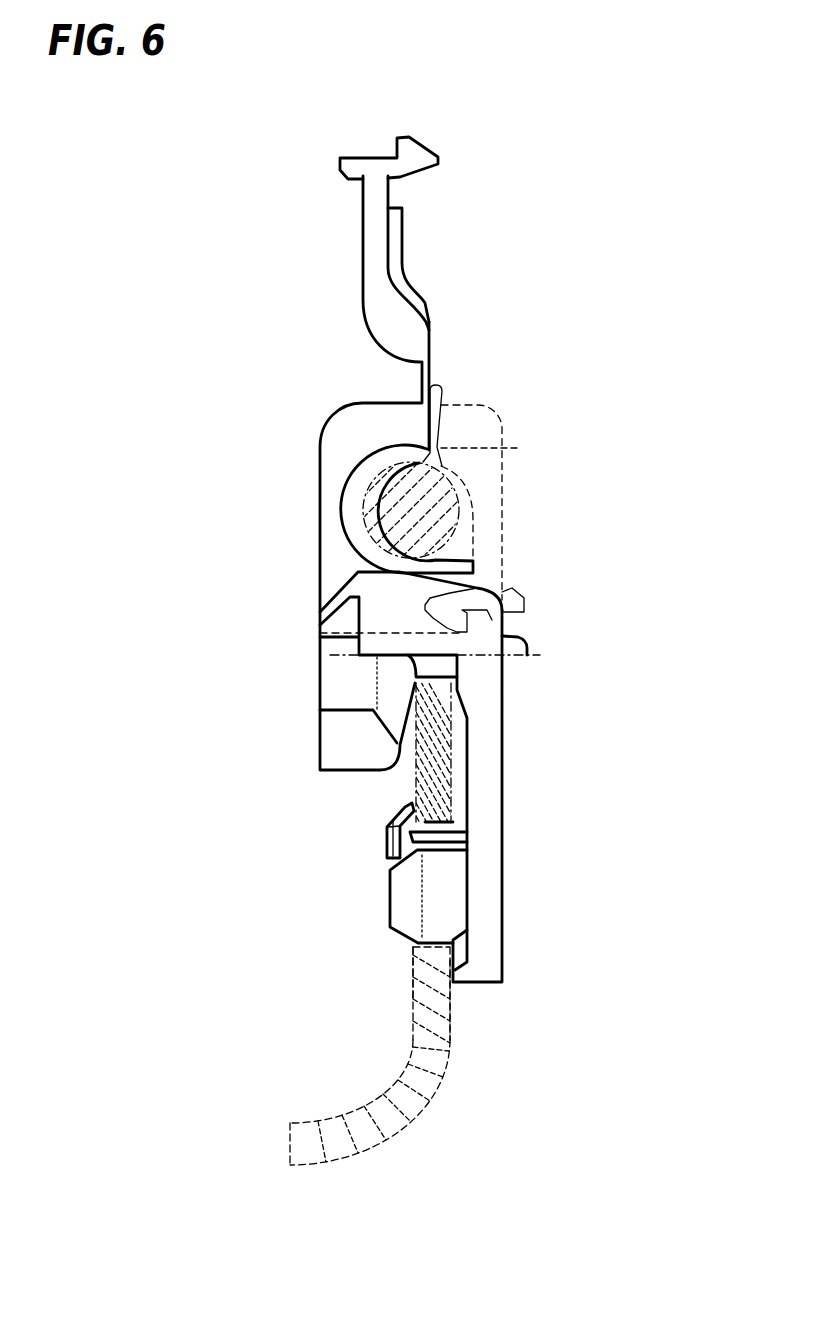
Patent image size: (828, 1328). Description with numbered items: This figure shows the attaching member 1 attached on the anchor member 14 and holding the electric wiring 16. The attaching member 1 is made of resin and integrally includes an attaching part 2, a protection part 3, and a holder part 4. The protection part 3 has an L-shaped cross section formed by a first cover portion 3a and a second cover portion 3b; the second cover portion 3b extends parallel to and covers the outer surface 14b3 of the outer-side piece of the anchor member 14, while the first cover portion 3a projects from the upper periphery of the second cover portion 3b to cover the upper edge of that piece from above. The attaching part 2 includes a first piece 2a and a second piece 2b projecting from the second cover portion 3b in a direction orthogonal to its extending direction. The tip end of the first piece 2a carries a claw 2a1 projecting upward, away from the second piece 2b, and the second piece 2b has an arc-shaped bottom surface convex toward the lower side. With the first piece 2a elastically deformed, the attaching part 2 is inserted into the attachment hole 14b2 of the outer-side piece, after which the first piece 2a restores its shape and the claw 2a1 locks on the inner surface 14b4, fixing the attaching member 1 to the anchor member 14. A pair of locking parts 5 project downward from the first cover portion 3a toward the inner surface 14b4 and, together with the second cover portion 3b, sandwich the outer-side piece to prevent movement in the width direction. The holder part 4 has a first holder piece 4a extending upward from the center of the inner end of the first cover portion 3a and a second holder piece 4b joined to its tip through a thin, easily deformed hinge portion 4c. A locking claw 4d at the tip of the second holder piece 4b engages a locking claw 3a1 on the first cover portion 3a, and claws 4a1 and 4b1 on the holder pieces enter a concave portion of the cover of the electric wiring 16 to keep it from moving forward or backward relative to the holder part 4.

The attaching member 1 is at (318, 403).
The attaching part 2 is at (310, 929).
The first piece 2a is at (372, 860).
The claw 2a1 is at (388, 817).
The second piece 2b is at (403, 908).
The protection part 3 is at (505, 770).
The first cover portion 3a is at (318, 631).
The locking claw 3a1 is at (478, 638).
The second cover portion 3b is at (485, 848).
The holder part 4 is at (318, 474).
The first holder piece 4a is at (318, 557).
The claw 4a1 is at (413, 455).
The second holder piece 4b is at (362, 262).
The claw 4b1 is at (397, 272).
The hinge portion 4c is at (430, 373).
The locking claw 4d is at (410, 176).
The locking part 5 is at (338, 694).
The anchor member 14 is at (447, 1080).
The attachment hole 14b2 is at (407, 945).
The outer surface 14b3 is at (450, 1023).
The inner surface 14b4 is at (415, 775).
The electric wiring 16 is at (443, 498).